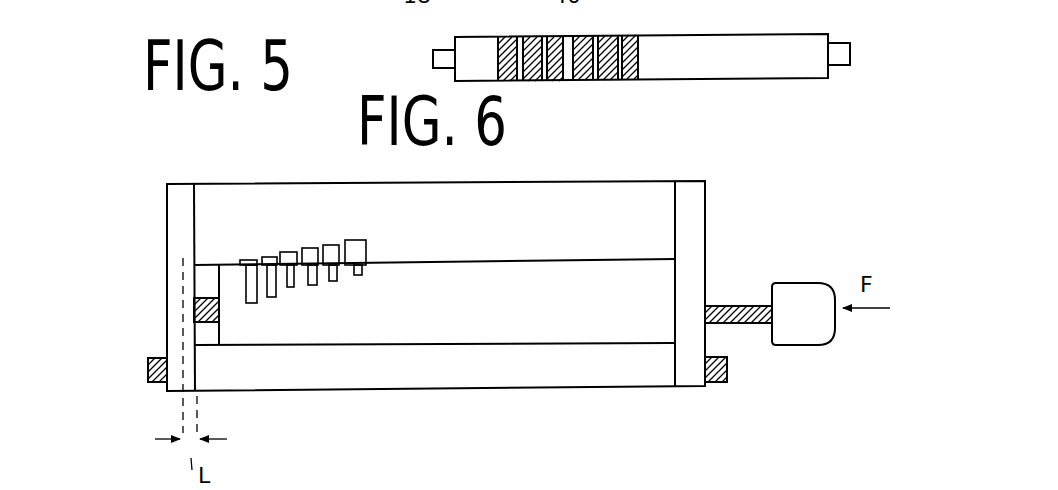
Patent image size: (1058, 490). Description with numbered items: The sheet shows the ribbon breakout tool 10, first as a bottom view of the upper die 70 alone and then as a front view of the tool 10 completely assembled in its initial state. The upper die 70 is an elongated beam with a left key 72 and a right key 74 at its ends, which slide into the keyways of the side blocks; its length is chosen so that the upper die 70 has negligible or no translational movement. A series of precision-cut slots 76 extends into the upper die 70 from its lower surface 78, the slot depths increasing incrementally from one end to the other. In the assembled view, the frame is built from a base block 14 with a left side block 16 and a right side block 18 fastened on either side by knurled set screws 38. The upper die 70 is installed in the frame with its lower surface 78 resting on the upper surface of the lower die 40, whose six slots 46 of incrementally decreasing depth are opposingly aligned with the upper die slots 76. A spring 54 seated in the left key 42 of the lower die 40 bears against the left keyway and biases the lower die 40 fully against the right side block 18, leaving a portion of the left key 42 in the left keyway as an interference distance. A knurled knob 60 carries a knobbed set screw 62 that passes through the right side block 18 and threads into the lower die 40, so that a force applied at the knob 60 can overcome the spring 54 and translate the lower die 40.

In FIG. 6, the ribbon breakout tool 10 is at (98, 202).
In FIG. 6, the base block 14 is at (565, 362).
In FIG. 6, the left side block 16 is at (172, 213).
In FIG. 6, the right side block 18 is at (690, 205).
In FIG. 6, the knurled set screws 38 is at (148, 368).
In FIG. 6, the lower die 40 is at (512, 283).
In FIG. 6, the left key 42 is at (205, 338).
In FIG. 6, the slots of the lower die 46 is at (364, 274).
In FIG. 6, the spring 54 is at (203, 297).
In FIG. 6, the knurled knob 60 is at (791, 288).
In FIG. 6, the knobbed set screw 62 is at (730, 305).
In FIG. 5, the upper die 70 is at (506, 24).
In FIG. 6, the upper die 70 is at (425, 227).
In FIG. 5, the left key of the upper die 72 is at (434, 49).
In FIG. 5, the right key of the upper die 74 is at (830, 34).
In FIG. 5, the slots of the upper die 76 is at (599, 36).
In FIG. 6, the slots of the upper die 76 is at (362, 240).
In FIG. 5, the lower surface of the upper die 78 is at (728, 58).